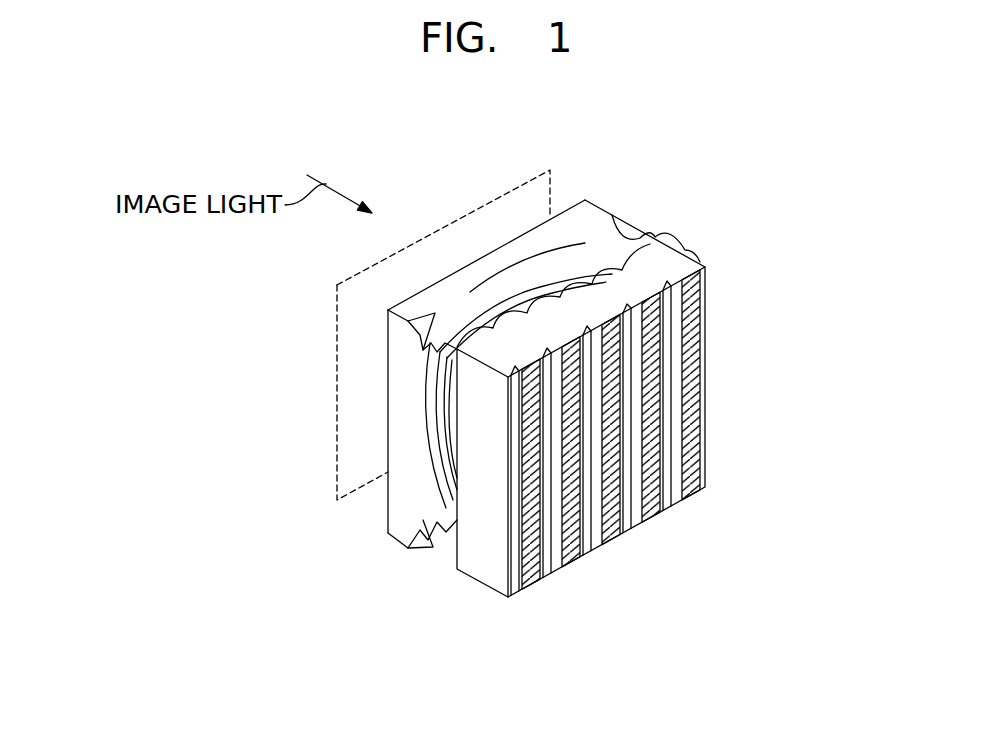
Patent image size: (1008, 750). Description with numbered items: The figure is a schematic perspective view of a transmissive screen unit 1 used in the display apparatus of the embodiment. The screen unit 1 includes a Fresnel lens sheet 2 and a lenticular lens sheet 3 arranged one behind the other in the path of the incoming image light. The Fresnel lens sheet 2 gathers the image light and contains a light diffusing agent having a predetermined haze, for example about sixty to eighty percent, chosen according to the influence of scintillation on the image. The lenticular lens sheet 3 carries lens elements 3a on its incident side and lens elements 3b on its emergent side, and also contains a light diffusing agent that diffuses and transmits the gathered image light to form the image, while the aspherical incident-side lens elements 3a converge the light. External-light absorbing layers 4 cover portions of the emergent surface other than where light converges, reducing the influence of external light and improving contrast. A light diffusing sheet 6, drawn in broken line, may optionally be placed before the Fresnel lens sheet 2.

The screen unit 1 is at (773, 215).
The Fresnel lens sheet 2 is at (388, 503).
The lenticular lens sheet 3 is at (468, 588).
The lens elements on the incident side 3a is at (540, 297).
The lens elements on the emergent side 3b is at (547, 570).
The external-light absorbing layers 4 is at (528, 597).
The light diffusing sheet 6 is at (337, 333).